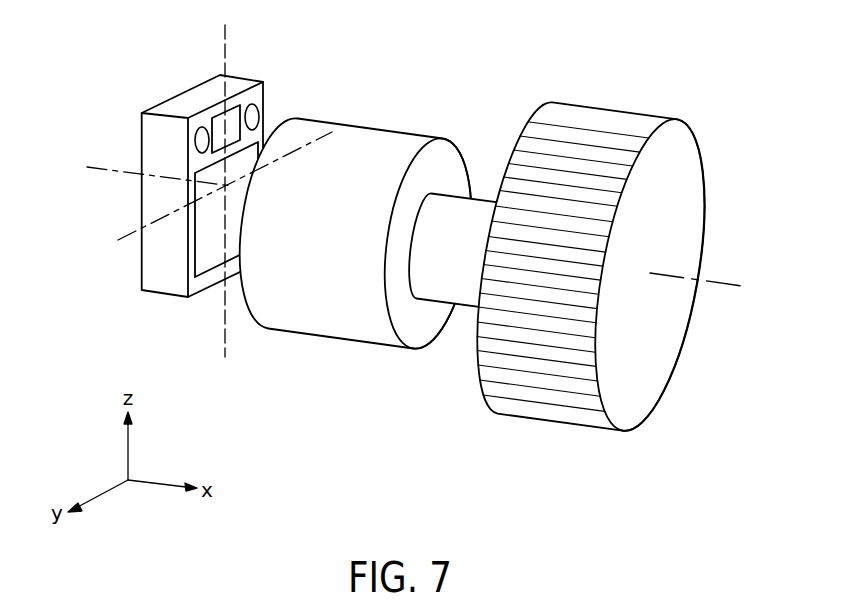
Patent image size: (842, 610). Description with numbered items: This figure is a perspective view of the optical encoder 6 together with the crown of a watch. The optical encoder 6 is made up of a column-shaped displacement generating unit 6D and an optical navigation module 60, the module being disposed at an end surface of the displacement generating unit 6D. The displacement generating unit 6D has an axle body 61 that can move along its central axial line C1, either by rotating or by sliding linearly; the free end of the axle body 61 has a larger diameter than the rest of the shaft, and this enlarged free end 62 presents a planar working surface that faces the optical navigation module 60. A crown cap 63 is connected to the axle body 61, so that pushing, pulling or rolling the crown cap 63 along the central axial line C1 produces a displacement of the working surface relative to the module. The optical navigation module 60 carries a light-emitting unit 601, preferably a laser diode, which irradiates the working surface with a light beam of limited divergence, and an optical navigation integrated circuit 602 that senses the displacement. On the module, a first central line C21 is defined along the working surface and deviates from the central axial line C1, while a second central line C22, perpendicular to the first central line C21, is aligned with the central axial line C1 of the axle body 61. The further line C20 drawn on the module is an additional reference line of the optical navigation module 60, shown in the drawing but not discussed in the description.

The optical encoder 6 is at (414, 221).
The displacement generating unit 6D is at (376, 186).
The optical navigation module 60 is at (175, 150).
The light-emitting unit 601 is at (230, 110).
The optical navigation integrated circuit 602 is at (206, 250).
The axle body 61 is at (461, 193).
The rotor body 62 is at (385, 137).
The crown cap 63 is at (612, 113).
The central axial line C1 is at (723, 283).
The axis line of holder C20 is at (122, 167).
The first central line C21 is at (132, 229).
The second central line C22 is at (225, 332).